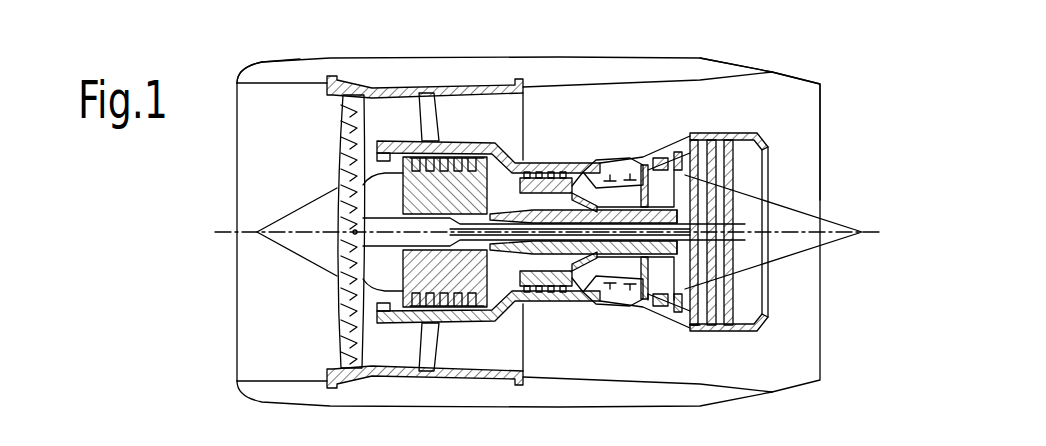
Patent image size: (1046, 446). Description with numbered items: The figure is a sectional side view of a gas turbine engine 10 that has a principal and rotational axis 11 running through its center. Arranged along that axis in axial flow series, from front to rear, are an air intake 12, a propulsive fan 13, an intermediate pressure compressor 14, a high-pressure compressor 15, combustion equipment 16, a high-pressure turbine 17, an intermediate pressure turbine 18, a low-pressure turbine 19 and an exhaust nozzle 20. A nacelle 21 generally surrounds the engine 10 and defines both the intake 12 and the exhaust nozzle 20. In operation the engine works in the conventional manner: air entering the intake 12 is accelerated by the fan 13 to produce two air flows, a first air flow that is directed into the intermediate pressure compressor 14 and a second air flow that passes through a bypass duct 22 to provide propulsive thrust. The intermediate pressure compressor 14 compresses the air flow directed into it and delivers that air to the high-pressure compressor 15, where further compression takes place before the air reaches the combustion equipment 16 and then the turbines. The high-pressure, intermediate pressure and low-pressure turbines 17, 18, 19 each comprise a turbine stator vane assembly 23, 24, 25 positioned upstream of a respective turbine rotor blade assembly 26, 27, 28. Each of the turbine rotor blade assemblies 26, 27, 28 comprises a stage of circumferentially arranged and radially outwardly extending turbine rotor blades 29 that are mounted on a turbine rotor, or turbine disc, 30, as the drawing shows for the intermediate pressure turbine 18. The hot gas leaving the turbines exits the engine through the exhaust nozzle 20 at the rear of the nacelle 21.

The gas turbine engine 10 is at (232, 131).
The principal and rotational axis 11 is at (228, 230).
The air intake 12 is at (303, 73).
The propulsive fan 13 is at (340, 338).
The intermediate pressure compressor 14 is at (447, 300).
The high-pressure compressor 15 is at (549, 176).
The combustion equipment 16 is at (600, 288).
The high-pressure turbine 17 is at (640, 297).
The intermediate pressure turbine 18 is at (679, 152).
The low-pressure turbine 19 is at (696, 327).
The exhaust nozzle 20 is at (790, 104).
The nacelle 21 is at (570, 56).
The bypass duct 22 is at (504, 128).
The turbine stator vane assembly 23 is at (633, 166).
The turbine stator vane assembly 24 is at (662, 164).
The turbine stator vane assembly 25 is at (683, 150).
The turbine rotor blade assembly 26 is at (652, 303).
The turbine rotor blade assembly 27 is at (680, 204).
The turbine rotor blade assembly 28 is at (699, 330).
The turbine rotor blades 29 is at (669, 304).
The turbine disc 30 is at (684, 266).